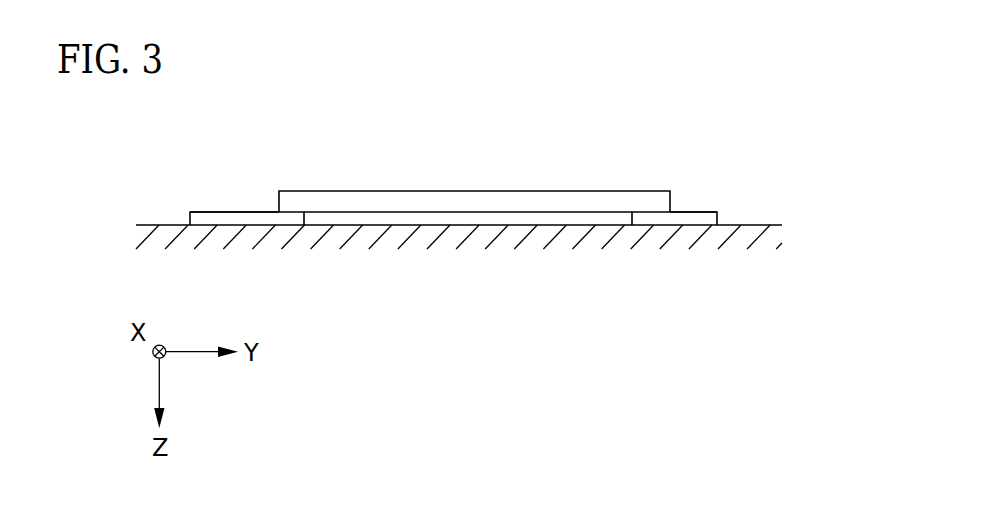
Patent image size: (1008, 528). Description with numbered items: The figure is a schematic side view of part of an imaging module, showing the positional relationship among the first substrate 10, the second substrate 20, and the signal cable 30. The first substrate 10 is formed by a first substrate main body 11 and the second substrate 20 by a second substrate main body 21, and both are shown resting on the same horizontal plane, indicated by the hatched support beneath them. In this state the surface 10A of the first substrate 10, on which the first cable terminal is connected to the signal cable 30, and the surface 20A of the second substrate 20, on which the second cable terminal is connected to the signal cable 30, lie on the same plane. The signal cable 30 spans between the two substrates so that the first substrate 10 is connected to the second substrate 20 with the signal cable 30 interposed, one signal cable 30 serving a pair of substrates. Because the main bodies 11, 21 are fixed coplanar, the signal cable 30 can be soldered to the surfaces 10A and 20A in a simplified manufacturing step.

The first substrate 10 is at (247, 261).
The first substrate main body 11 is at (245, 220).
The surface 10A is at (262, 210).
The second substrate 20 is at (674, 261).
The second substrate main body 21 is at (675, 220).
The surface 20A is at (690, 210).
The signal cable 30 is at (473, 203).